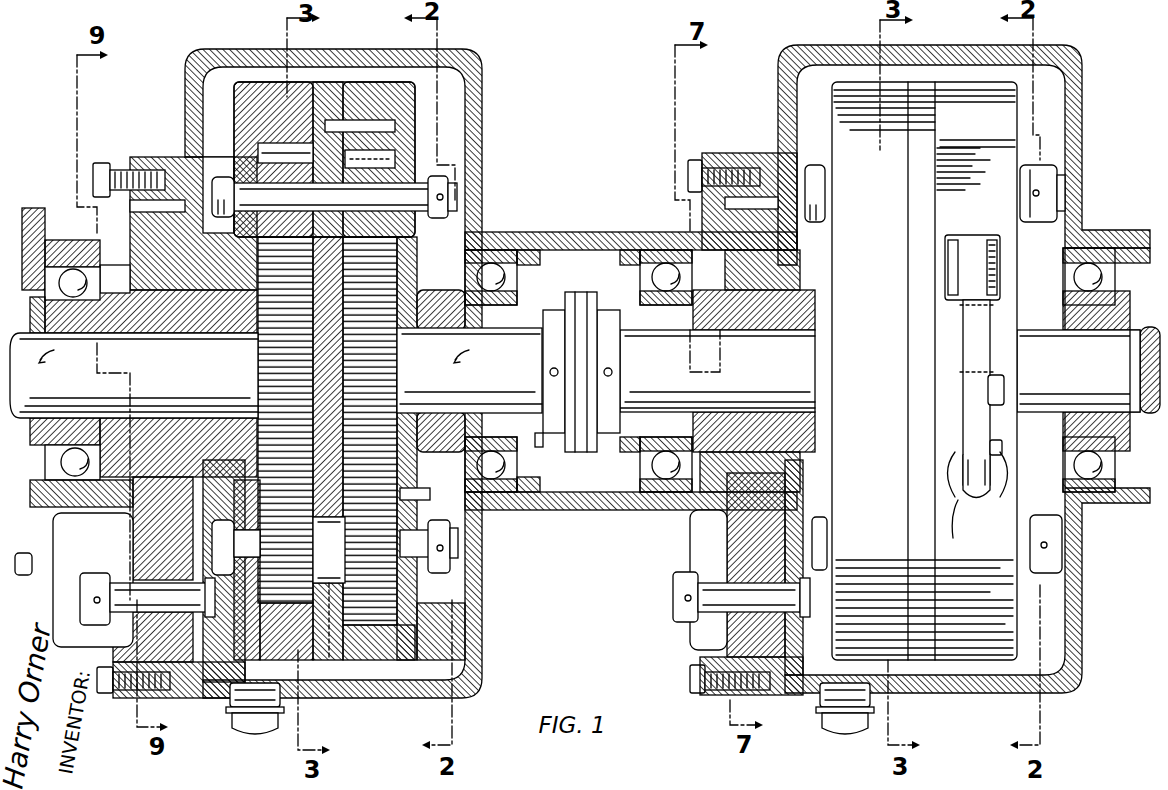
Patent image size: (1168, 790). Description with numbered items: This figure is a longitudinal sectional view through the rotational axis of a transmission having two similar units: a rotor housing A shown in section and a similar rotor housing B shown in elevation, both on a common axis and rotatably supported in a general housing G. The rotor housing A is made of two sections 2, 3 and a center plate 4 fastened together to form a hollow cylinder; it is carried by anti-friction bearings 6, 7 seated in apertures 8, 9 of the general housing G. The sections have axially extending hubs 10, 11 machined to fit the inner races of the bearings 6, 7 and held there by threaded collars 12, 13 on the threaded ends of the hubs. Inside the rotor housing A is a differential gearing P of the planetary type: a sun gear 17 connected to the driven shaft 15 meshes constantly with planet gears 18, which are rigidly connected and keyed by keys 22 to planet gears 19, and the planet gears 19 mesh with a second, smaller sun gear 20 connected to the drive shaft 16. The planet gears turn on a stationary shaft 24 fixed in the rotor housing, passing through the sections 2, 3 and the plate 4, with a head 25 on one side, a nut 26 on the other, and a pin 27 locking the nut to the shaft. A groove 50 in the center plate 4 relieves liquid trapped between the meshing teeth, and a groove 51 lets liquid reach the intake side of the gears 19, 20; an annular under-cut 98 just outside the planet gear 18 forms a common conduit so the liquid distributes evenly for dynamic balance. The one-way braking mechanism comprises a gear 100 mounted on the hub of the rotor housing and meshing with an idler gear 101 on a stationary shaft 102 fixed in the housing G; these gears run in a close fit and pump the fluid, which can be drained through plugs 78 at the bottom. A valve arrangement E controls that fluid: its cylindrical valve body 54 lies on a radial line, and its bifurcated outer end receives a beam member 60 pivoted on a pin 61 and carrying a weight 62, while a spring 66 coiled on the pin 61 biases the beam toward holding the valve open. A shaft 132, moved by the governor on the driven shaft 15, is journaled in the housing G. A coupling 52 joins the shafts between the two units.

The rotor housing section 2 is at (247, 82).
The rotor housing section 3 is at (382, 82).
The center plate 4 is at (330, 82).
The anti-friction bearing 6 is at (58, 283).
The anti-friction bearing 7 is at (507, 280).
The aperture 8 is at (60, 240).
The aperture 9 is at (492, 250).
The hub 10 is at (820, 292).
The hub 11 is at (773, 362).
The threaded collar 12 is at (36, 310).
The threaded collar 13 is at (535, 450).
The driven shaft 15 is at (412, 374).
The drive shaft 16 is at (1140, 360).
The sun gear 17 is at (262, 370).
The planet gear 18 is at (228, 525).
The planet gear 19 is at (395, 127).
The sun gear 20 is at (395, 367).
The key 22 is at (345, 168).
The stationary shaft 24 is at (1090, 192).
The head 25 is at (222, 178).
The nut 26 is at (438, 176).
The pin 27 is at (440, 214).
The groove 50 is at (329, 550).
The groove 51 is at (330, 660).
The flexible coupling 52 is at (580, 455).
The valve body 54 is at (992, 490).
The beam member 60 is at (992, 337).
The pin 61 is at (1010, 385).
The weight 62 is at (1000, 270).
The spring 66 is at (1005, 458).
The plug 78 is at (252, 735).
The annular under-cut 98 is at (270, 142).
The gear 100 is at (145, 530).
The idler gear 101 is at (145, 555).
The stationary shaft 102 is at (445, 598).
The shaft 132 is at (22, 558).
The general housing G is at (478, 66).
The rotor housing A is at (408, 113).
The rotor housing B is at (1000, 125).
The differential gearing P is at (412, 283).
The valve arrangement E is at (950, 519).